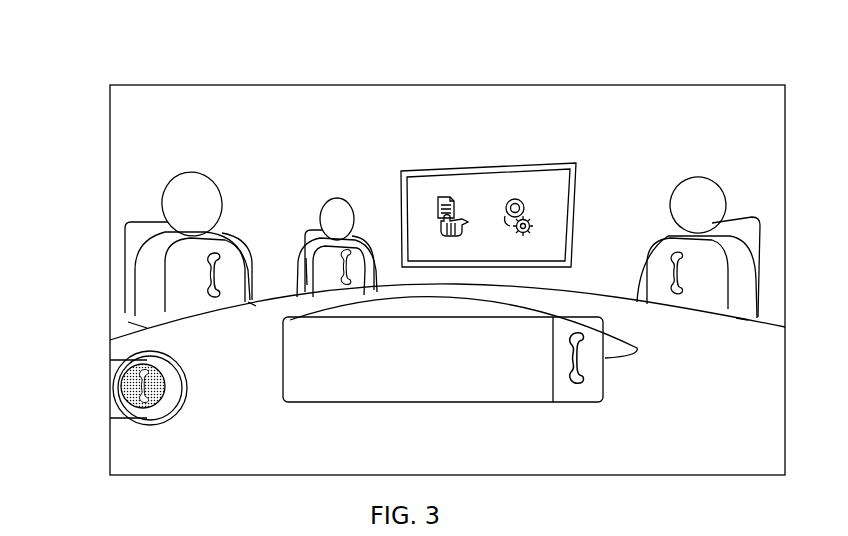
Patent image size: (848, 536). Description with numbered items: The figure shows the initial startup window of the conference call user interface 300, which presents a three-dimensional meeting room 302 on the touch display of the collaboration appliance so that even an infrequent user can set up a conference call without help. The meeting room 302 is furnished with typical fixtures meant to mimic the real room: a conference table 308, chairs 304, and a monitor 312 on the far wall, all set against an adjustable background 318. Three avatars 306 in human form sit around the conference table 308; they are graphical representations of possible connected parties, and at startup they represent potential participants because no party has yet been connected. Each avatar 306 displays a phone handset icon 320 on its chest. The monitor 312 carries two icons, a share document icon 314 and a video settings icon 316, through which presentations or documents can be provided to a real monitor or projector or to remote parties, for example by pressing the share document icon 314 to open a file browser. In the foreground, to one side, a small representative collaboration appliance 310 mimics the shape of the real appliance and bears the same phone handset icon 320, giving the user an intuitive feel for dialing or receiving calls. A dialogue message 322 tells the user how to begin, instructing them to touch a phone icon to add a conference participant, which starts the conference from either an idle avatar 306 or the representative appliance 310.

The conference call user interface 300 is at (751, 77).
The meeting room 302 is at (262, 151).
The chairs 304 is at (130, 224).
The avatars 306 is at (200, 182).
The conference table 308 is at (667, 476).
The representative collaboration appliance 310 is at (115, 422).
The monitor 312 is at (565, 189).
The share document icon 314 is at (447, 179).
The video settings icon 316 is at (520, 178).
The background 318 is at (626, 108).
The phone handset icons 320 is at (216, 300).
The dialogue message 322 is at (577, 404).